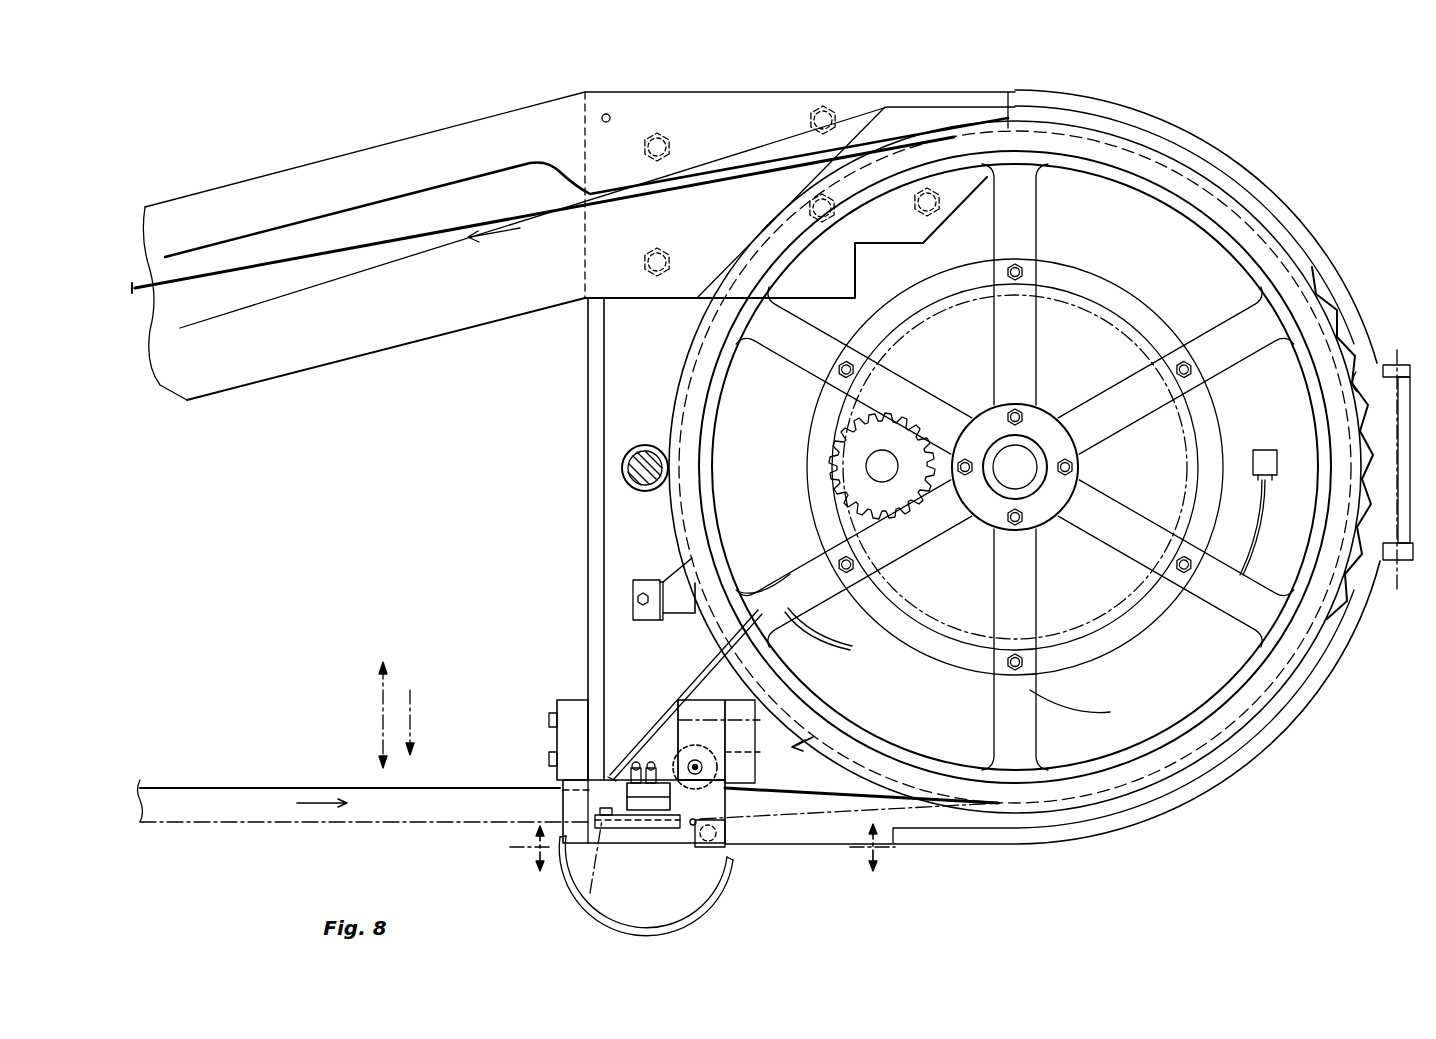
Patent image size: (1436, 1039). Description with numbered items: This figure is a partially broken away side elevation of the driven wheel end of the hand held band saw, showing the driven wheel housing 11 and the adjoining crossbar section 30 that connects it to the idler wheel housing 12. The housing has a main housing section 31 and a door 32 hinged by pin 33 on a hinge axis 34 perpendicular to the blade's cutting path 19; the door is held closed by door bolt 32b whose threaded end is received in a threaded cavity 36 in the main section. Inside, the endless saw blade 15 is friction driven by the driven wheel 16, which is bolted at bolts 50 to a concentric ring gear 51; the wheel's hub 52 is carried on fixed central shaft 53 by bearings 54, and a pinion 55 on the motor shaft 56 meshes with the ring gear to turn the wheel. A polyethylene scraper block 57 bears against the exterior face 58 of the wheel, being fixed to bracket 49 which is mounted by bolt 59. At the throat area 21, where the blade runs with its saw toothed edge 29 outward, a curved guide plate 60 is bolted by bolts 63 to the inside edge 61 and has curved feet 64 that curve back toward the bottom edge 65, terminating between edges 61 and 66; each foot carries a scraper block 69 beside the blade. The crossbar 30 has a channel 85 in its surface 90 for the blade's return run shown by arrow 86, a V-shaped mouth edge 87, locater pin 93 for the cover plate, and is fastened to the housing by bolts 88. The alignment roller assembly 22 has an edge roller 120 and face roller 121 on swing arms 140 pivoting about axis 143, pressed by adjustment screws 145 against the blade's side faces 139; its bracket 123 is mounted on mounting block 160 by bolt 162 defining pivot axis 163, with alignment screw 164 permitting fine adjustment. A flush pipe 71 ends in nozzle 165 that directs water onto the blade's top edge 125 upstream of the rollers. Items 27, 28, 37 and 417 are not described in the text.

The driven wheel housing 11 is at (1330, 150).
The idler wheel housing 12 is at (701, 853).
The saw blade 15 is at (397, 243).
The driven wheel 16 is at (1240, 690).
The arrow 19 is at (320, 805).
The throat area 21 is at (313, 507).
The alignment roller assembly 22 is at (815, 737).
The vertical adjustment direction 27 is at (383, 718).
The adjustment direction 28 is at (410, 712).
The saw toothed edge 29 is at (373, 826).
The crossbar section 30 is at (322, 156).
The main housing section 31 is at (1015, 467).
The door 32 is at (1368, 350).
The door bolt 32b is at (643, 458).
The pin 33 is at (1371, 387).
The hinge axis 34 is at (1398, 417).
The threaded cavity 36 is at (642, 492).
The pivot direction 37 is at (619, 488).
The bracket 49 is at (652, 580).
The bolts 50 is at (1178, 373).
The ring gear 51 is at (795, 478).
The hub 52 is at (1040, 420).
The central shaft 53 is at (1020, 465).
The bearings 54 is at (1028, 485).
The pinion 55 is at (892, 435).
The motor shaft 56 is at (892, 480).
The scraper block 57 is at (687, 582).
The exterior face 58 is at (697, 547).
The bolt 59 is at (642, 600).
The curved guide plate 60 is at (566, 900).
The inside edge 61 is at (585, 662).
The bolts 63 is at (549, 720).
The curved feet 64 is at (585, 925).
The bottom edge 65 is at (800, 843).
The end edge 66 is at (1343, 650).
The scraper block 69 is at (563, 803).
The flush pipe 71 is at (1256, 538).
The channel 85 is at (415, 206).
The arrow 86 is at (492, 238).
The bottom edge 87 is at (266, 380).
The bolts 88 is at (672, 256).
The surface 90 is at (281, 203).
The locater pin 93 is at (606, 122).
The edge roller 120 is at (720, 762).
The face roller 121 is at (651, 805).
The bracket 123 is at (718, 664).
The top edge 125 is at (570, 213).
The side faces 139 is at (710, 806).
The swing arm 140 is at (665, 828).
The pivot axis 143 is at (603, 858).
The adjustment screw 145 is at (715, 845).
The mounting block 160 is at (756, 712).
The bolt 162 is at (683, 707).
The pivot axis 163 is at (710, 694).
The alignment screw 164 is at (725, 833).
The nozzle 165 is at (610, 770).
The cover plate 417 is at (733, 92).